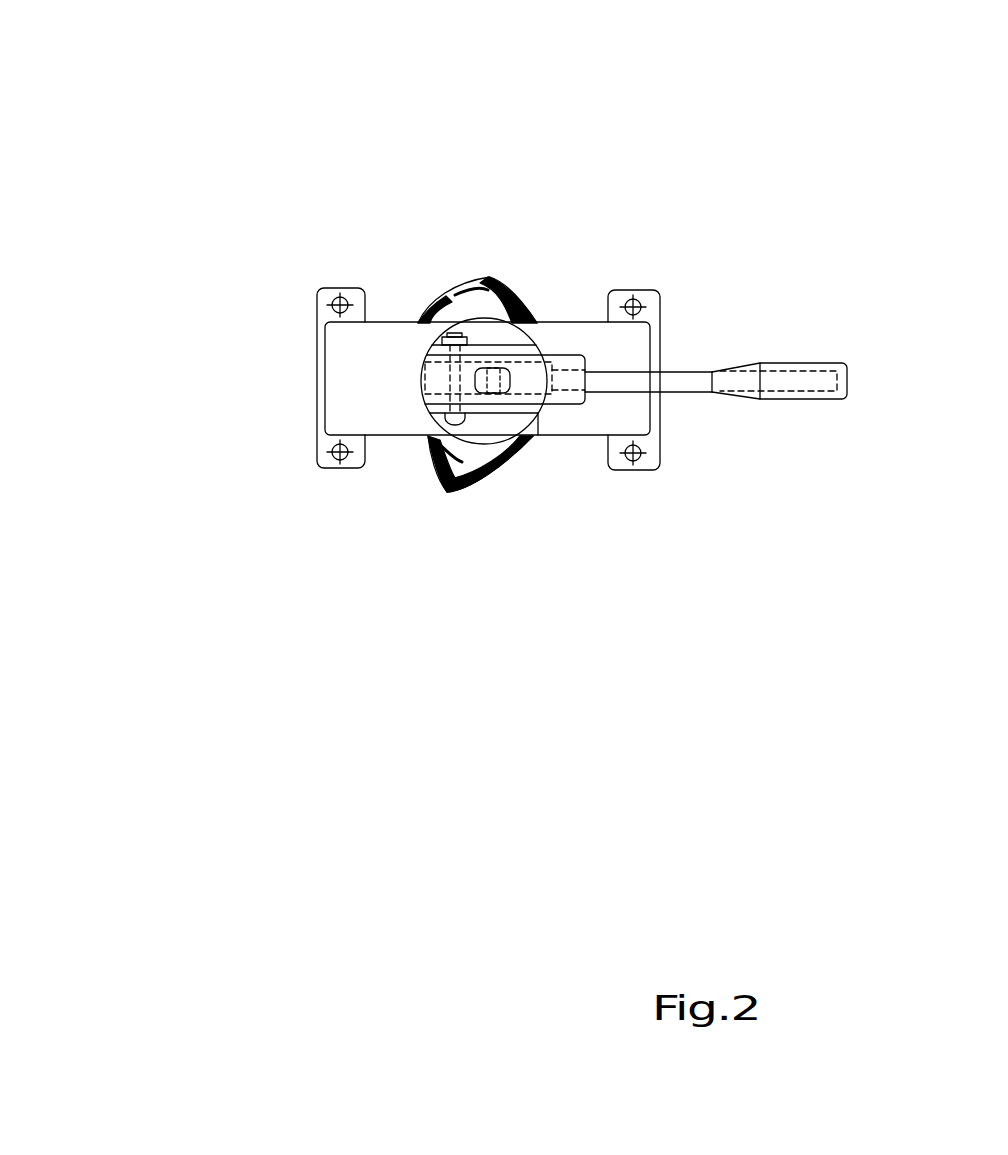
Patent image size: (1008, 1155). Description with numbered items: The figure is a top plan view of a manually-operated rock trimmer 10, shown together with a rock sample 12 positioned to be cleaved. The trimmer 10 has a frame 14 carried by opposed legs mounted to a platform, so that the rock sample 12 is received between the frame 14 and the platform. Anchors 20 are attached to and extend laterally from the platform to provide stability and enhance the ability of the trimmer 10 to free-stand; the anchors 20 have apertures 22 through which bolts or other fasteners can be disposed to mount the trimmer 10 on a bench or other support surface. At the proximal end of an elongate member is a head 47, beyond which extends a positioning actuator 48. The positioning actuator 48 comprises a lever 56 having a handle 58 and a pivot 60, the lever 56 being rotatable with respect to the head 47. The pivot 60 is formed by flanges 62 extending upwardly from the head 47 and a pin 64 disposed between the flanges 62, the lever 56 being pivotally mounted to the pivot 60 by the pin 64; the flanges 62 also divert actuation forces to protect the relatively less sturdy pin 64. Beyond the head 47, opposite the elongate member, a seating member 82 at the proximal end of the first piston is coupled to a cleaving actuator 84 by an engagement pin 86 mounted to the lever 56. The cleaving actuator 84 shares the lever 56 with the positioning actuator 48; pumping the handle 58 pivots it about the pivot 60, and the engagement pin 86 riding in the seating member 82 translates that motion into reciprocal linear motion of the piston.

The rock trimmer 10 is at (159, 742).
The rock sample 12 is at (419, 597).
The frame 14 is at (403, 385).
The anchors 20 is at (434, 259).
The apertures 22 is at (512, 370).
The head 47 is at (358, 372).
The positioning actuator 48 is at (641, 535).
The lever 56 is at (564, 459).
The handle 58 is at (738, 342).
The pivot 60 is at (419, 490).
The flanges 62 is at (477, 236).
The pin 64 is at (520, 584).
The seating member 82 is at (440, 307).
The cleaving actuator 84 is at (641, 535).
The engagement pin 86 is at (515, 485).